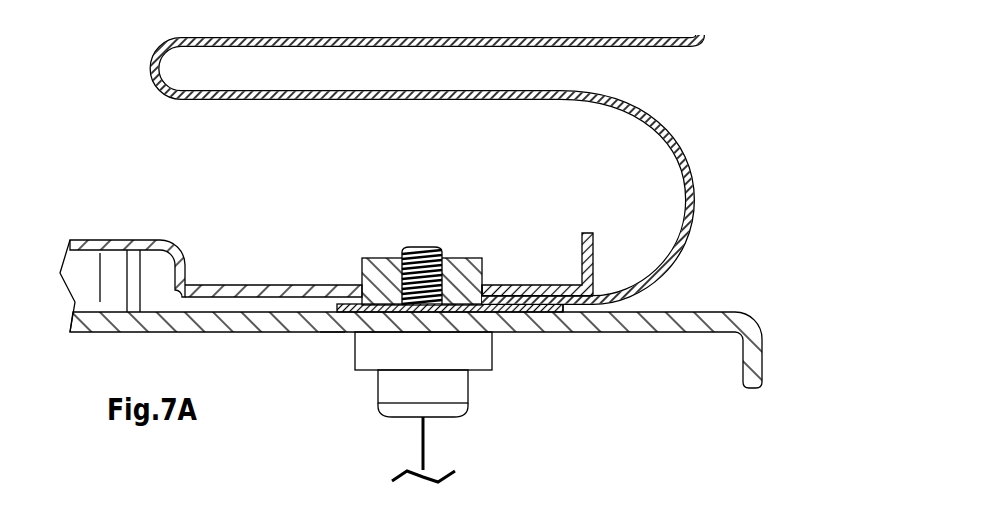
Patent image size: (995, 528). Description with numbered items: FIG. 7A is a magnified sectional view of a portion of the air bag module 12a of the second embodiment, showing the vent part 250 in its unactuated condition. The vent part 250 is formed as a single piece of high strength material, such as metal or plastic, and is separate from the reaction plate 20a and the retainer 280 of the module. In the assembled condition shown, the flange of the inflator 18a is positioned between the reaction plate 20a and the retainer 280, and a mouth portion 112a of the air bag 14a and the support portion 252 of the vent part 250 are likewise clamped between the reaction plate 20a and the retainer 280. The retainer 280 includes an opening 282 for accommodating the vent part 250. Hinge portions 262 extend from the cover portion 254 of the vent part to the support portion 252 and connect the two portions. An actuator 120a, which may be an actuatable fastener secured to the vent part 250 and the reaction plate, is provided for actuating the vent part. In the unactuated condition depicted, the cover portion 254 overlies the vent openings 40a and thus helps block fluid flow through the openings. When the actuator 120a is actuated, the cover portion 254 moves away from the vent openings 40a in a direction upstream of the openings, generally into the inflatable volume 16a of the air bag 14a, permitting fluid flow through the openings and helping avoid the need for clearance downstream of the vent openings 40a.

The air bag module 12a is at (190, 190).
The air bag 14a is at (658, 118).
The inflatable volume 16a is at (290, 168).
The inflator 18a is at (113, 273).
The reaction plate 20a is at (658, 322).
The vent openings 40a is at (333, 332).
The mouth portion 112a is at (515, 290).
The actuator 120a is at (397, 390).
The vent part 250 is at (515, 310).
The support portion 252 is at (550, 312).
The cover portion 254 is at (360, 287).
The hinge portions 262 is at (487, 287).
The retainer 280 is at (538, 287).
The opening 282 is at (344, 288).